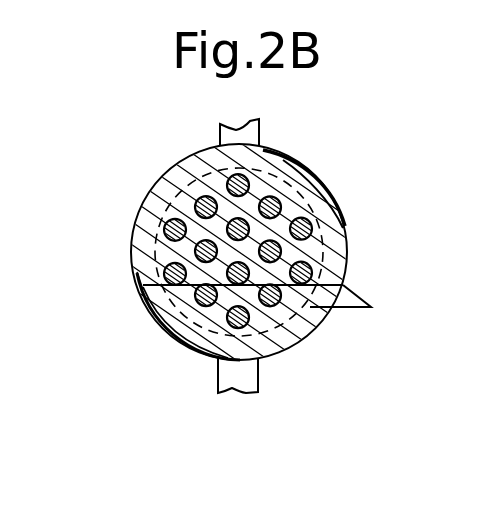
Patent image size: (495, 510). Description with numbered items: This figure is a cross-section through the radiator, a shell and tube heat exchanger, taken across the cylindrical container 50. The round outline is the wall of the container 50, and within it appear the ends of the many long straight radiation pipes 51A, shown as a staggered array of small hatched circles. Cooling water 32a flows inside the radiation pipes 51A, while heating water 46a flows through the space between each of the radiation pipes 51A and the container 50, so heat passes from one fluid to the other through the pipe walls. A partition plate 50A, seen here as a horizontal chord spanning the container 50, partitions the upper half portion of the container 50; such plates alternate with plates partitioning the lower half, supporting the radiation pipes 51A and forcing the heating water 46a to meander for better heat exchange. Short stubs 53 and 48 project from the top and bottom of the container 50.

The cylindrical container 50 is at (347, 214).
The partition plate 50A is at (345, 237).
The radiation pipe 51A is at (263, 150).
The upper stem 53 is at (260, 133).
The lower stem 48 is at (258, 377).
The cooling water 32a is at (371, 307).
The heating water 46a is at (310, 315).